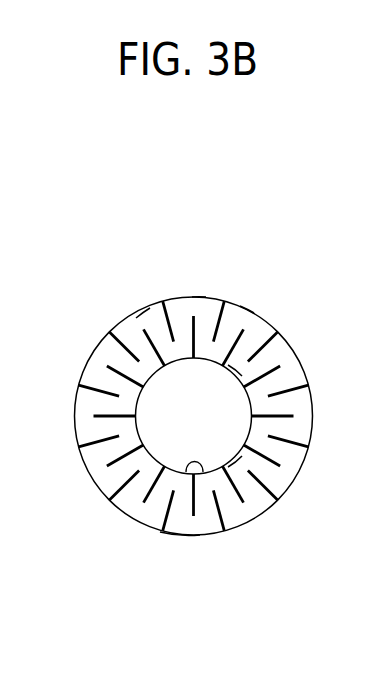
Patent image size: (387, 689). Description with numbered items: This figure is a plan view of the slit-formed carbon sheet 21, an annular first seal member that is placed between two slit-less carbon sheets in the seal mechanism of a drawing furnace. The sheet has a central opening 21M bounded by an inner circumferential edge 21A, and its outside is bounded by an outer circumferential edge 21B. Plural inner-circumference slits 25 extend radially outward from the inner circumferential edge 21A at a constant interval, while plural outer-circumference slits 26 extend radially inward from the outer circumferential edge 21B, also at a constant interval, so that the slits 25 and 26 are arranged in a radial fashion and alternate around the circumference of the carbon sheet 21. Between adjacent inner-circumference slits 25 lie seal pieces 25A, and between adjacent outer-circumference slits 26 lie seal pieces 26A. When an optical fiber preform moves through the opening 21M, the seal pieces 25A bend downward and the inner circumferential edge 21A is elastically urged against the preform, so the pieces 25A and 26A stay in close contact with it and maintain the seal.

The carbon sheet 21 is at (126, 520).
The inner circumferential edge 21A is at (203, 472).
The outer circumferential edge 21B is at (178, 537).
The opening 21M is at (140, 440).
The inner-circumference slit 25 is at (268, 372).
The seal piece 25A is at (240, 363).
The outer-circumference slit 26 is at (167, 302).
The seal piece 26A is at (142, 317).